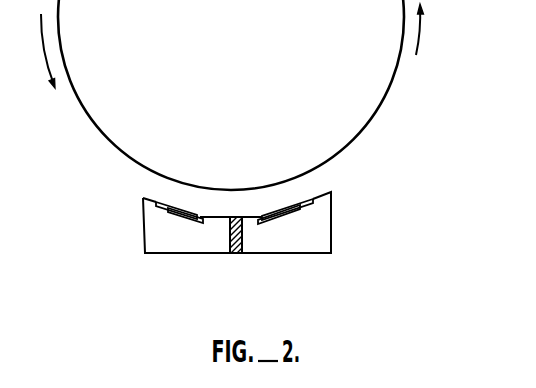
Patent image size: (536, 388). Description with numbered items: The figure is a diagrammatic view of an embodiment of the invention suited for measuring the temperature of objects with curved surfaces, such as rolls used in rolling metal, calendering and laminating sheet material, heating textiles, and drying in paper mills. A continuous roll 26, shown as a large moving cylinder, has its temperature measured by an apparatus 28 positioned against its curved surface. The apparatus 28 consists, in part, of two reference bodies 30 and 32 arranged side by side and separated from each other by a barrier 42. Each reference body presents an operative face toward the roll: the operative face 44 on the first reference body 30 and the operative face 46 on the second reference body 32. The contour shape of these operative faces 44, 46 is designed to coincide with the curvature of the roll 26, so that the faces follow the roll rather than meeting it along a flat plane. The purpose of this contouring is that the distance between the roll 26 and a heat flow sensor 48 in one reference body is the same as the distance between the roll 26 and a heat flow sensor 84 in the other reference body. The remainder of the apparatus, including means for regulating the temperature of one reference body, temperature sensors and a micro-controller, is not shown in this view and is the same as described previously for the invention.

The continuous roll 26 is at (271, 45).
The apparatus 28 is at (256, 241).
The reference body 30 is at (201, 248).
The reference body 32 is at (279, 248).
The barrier 42 is at (235, 253).
The operative face 44 is at (162, 204).
The operative face 46 is at (307, 196).
The heat flow sensor 48 is at (177, 223).
The heat flow sensor 84 is at (294, 211).